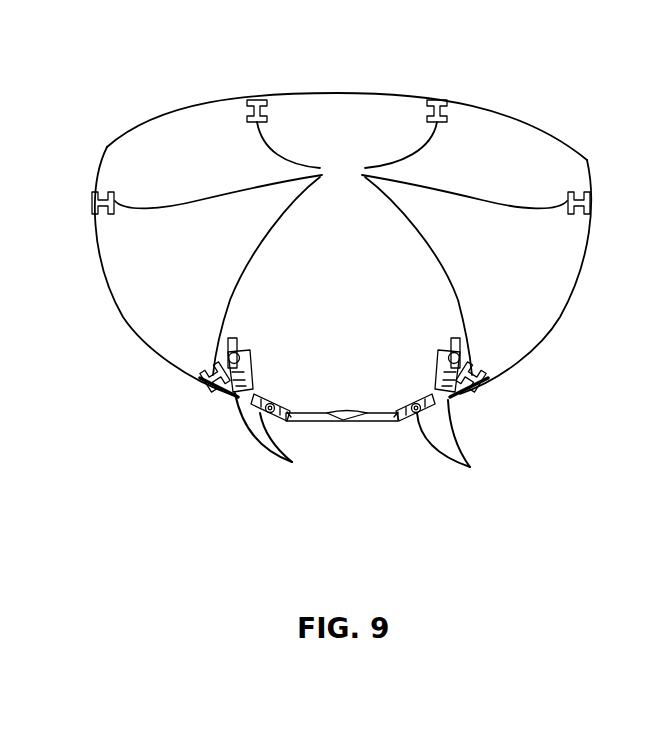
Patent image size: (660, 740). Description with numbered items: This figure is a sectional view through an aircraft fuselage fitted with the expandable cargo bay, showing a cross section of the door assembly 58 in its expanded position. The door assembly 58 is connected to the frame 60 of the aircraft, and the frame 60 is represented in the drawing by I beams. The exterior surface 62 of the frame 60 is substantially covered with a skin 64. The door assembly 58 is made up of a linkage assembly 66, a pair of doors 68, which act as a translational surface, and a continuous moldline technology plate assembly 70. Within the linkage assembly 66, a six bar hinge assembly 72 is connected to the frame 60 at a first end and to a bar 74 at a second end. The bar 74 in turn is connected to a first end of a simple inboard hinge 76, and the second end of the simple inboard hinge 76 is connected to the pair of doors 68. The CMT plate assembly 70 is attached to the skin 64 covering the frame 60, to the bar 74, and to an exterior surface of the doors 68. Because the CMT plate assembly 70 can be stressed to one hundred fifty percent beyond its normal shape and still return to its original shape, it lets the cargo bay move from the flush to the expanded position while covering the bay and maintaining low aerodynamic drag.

The door assembly 58 is at (410, 469).
The frame 60 is at (341, 248).
The exterior surface 62 is at (253, 100).
The skin 64 is at (107, 150).
The linkage assembly 66 is at (234, 411).
The pair of doors 68 is at (340, 423).
The continuous moldline technology (CMT) plate assembly 70 is at (292, 462).
The six bar hinge assembly 72 is at (253, 362).
The bar 74 is at (258, 397).
The simple inboard hinge 76 is at (407, 405).